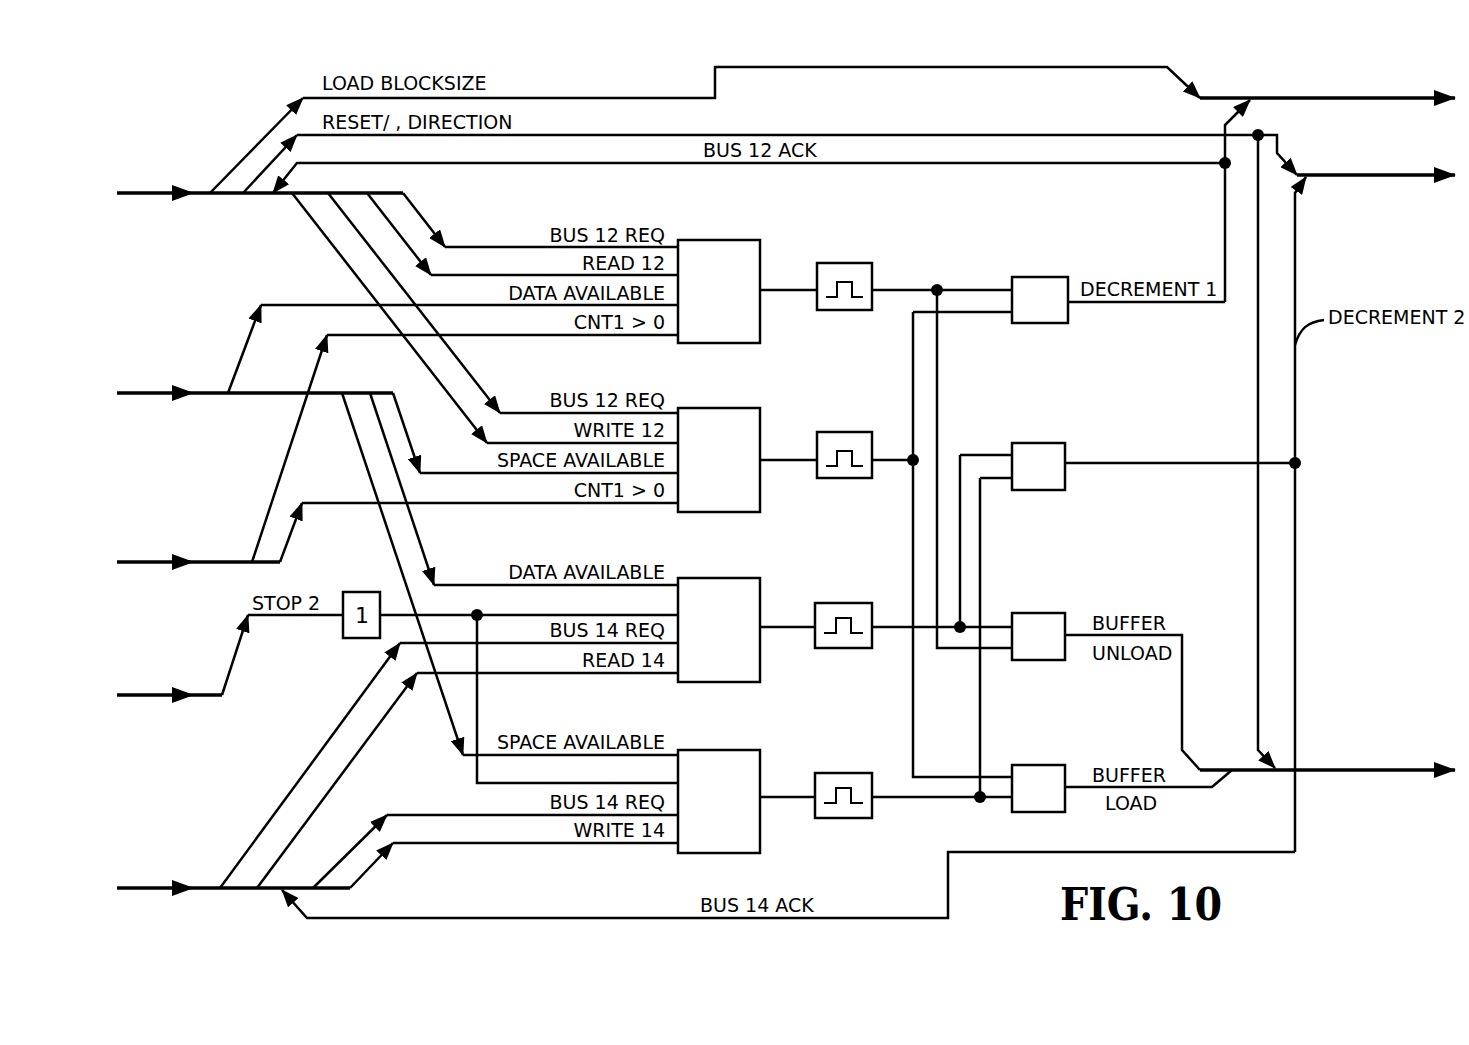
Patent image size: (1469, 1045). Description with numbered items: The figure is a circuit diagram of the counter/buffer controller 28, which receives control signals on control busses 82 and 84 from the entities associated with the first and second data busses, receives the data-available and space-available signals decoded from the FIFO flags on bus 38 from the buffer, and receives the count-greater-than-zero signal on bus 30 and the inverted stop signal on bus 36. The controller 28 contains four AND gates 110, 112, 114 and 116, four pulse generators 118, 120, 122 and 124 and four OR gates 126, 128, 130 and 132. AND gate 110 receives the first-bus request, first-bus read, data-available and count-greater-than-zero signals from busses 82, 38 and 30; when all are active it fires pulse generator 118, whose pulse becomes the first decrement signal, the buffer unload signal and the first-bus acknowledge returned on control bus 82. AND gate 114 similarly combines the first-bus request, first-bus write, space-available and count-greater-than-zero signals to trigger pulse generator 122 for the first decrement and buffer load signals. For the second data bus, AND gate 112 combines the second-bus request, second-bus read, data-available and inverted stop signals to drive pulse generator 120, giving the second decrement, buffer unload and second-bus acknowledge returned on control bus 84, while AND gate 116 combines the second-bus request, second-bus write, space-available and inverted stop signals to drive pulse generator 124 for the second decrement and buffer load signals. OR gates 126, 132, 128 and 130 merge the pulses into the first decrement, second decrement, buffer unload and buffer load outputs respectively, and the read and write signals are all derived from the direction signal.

The control bus 82 is at (157, 192).
The bus 38 is at (157, 392).
The bus 30 is at (157, 561).
The bus 36 is at (157, 694).
The control bus 84 is at (157, 887).
The AND gate 110 is at (742, 240).
The AND gate 114 is at (742, 408).
The AND gate 112 is at (742, 578).
The AND gate 116 is at (742, 750).
The pulse generator 118 is at (835, 263).
The pulse generator 122 is at (835, 432).
The pulse generator 120 is at (835, 603).
The pulse generator 124 is at (835, 773).
The OR gate 126 is at (1047, 277).
The OR gate 132 is at (1047, 443).
The OR gate 128 is at (1047, 613).
The OR gate 130 is at (1047, 765).
The counter/buffer controller 28 is at (1352, 876).